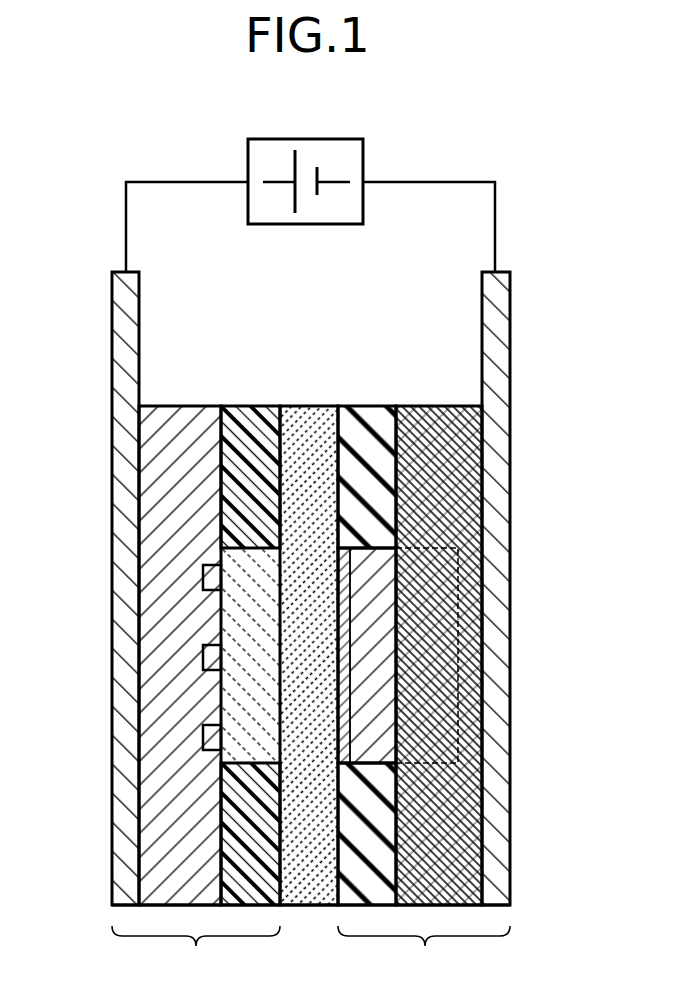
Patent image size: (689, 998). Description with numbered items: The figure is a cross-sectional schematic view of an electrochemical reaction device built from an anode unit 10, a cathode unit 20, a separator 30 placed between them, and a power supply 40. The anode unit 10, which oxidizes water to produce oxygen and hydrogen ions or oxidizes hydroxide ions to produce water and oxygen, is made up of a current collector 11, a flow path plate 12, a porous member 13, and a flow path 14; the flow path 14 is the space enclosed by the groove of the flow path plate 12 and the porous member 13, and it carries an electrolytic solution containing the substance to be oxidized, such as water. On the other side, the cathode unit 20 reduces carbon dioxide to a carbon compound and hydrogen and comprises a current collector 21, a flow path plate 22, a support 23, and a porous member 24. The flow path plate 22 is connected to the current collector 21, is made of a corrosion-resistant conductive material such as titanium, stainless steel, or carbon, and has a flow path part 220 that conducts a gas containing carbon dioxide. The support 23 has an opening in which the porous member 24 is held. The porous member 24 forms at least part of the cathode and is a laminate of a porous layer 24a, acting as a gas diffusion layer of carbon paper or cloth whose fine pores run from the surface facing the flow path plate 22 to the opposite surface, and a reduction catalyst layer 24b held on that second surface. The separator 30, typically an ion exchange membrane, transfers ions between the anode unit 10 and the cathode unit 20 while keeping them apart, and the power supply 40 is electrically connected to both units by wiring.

The anode unit 10 is at (196, 952).
The current collector 11 is at (122, 404).
The flow path plate 12 is at (182, 420).
The porous member 13 is at (248, 558).
The flow path 14 is at (206, 572).
The cathode unit 20 is at (424, 952).
The current collector 21 is at (497, 410).
The flow path plate 22 is at (440, 420).
The support 23 is at (366, 420).
The porous member 24 is at (370, 703).
The porous layer 24a is at (386, 765).
The reduction catalyst layer 24b is at (345, 770).
The separator 30 is at (303, 907).
The power supply 40 is at (336, 226).
The flow path part 220 is at (430, 548).